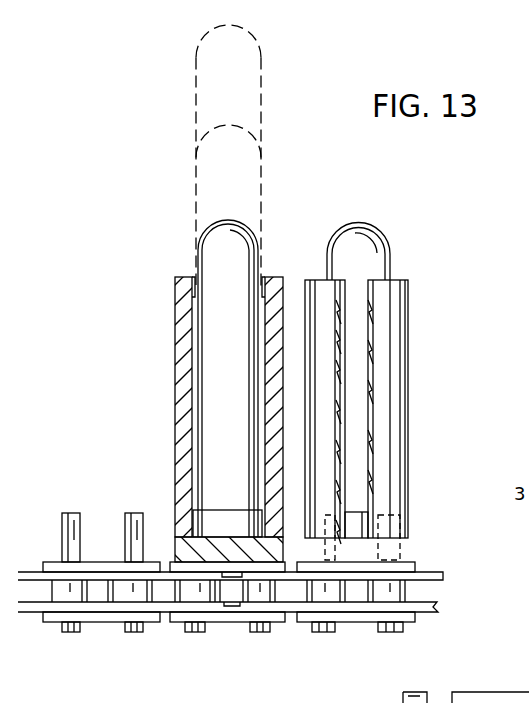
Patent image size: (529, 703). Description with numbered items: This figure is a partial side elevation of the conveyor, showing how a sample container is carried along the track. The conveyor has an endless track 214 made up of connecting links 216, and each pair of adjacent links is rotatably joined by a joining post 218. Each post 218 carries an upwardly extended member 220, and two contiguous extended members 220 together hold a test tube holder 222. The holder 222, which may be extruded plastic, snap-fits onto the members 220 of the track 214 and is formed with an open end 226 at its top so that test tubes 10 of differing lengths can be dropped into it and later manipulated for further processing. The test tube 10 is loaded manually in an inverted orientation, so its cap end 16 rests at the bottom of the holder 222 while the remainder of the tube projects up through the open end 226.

The test tube 10 is at (200, 248).
The cap end 16 is at (220, 520).
The endless track 214 is at (437, 605).
The connecting link 216 is at (357, 625).
The joining post 218 is at (63, 630).
The extended member 220 is at (60, 533).
The test tube holder 222 is at (175, 344).
The open end 226 is at (183, 277).